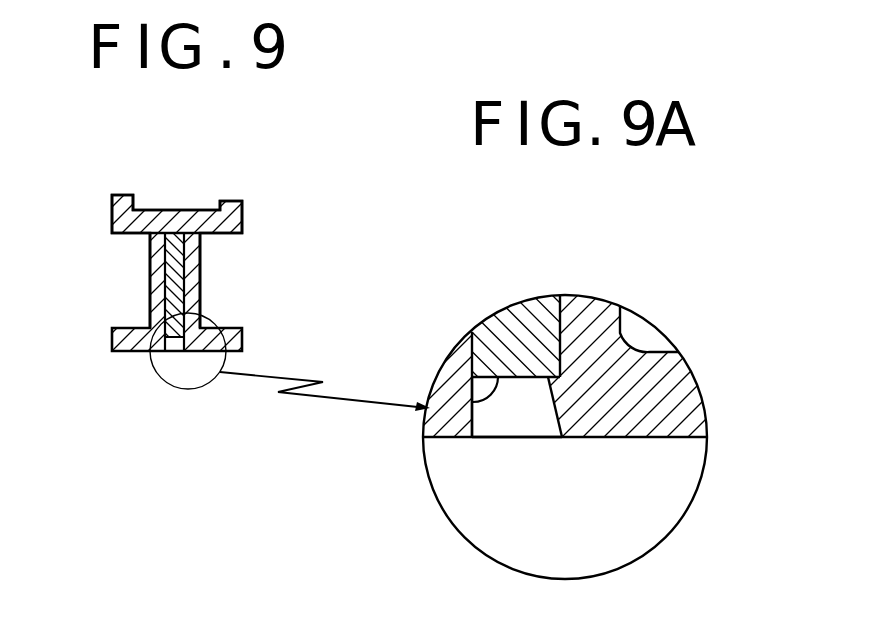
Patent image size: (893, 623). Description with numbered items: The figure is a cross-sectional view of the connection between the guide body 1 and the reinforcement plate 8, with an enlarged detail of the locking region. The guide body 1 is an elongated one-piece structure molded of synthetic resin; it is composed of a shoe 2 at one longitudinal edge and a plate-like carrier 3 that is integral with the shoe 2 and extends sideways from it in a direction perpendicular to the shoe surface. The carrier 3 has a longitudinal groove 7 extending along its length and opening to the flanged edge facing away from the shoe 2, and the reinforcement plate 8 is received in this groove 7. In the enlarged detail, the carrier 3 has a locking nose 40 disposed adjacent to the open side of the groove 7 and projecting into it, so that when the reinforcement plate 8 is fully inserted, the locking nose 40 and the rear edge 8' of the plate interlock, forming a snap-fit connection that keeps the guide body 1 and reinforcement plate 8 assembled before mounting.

In FIG. 9, the guide body 1 is at (120, 192).
In FIG. 9, the shoe 2 is at (235, 222).
In FIG. 9, the carrier 3 is at (150, 272).
In FIG. 9A, the carrier 3 is at (650, 387).
In FIG. 9A, the longitudinal groove 7 is at (492, 422).
In FIG. 9, the reinforcement plate 8 is at (255, 292).
In FIG. 9A, the reinforcement plate 8 is at (516, 330).
In FIG. 9A, the rear edge 8' is at (432, 363).
In FIG. 9A, the locking nose 40 is at (553, 400).